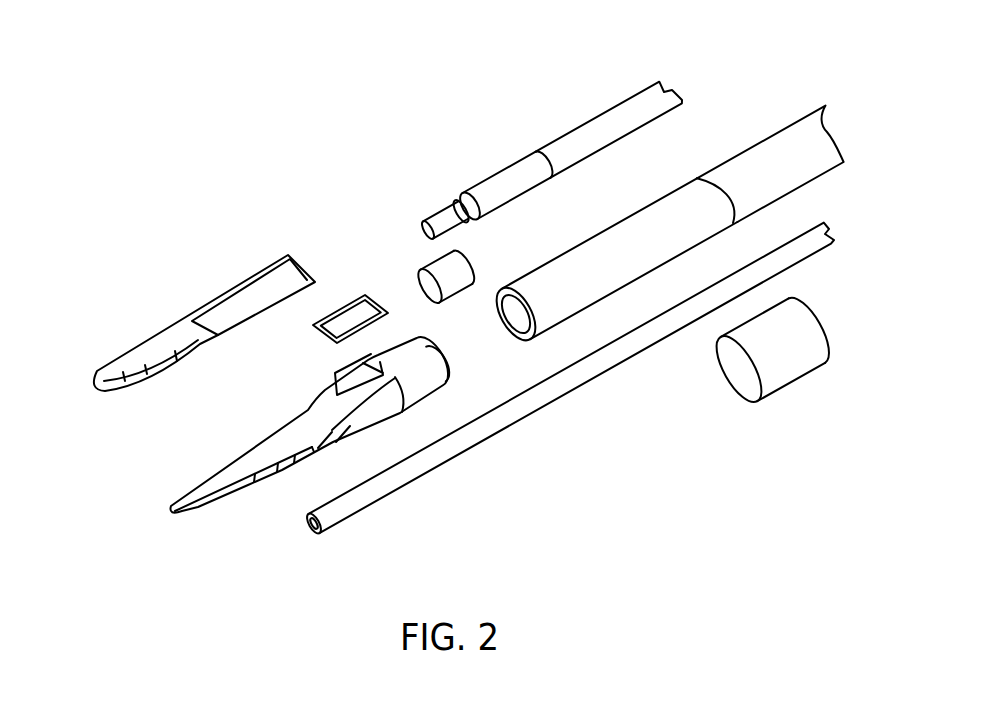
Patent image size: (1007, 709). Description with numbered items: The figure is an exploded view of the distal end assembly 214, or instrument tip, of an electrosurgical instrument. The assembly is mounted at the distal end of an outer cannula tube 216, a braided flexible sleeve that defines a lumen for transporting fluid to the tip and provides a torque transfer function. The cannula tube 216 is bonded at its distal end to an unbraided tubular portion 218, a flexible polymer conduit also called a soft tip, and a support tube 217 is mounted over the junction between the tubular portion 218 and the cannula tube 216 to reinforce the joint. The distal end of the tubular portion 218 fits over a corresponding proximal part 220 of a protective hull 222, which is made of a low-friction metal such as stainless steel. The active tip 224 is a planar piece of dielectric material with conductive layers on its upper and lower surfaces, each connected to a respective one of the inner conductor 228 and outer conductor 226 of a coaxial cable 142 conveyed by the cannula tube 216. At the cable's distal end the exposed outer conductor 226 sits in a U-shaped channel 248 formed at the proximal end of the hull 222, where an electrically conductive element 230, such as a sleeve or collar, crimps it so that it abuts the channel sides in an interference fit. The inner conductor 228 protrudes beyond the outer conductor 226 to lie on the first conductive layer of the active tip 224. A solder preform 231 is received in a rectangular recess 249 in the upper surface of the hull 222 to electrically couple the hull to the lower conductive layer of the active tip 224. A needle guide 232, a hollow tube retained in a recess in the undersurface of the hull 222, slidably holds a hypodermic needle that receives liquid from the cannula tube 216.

The distal end assembly 214 is at (163, 276).
The coaxial cable 142 is at (613, 122).
The outer cannula tube 216 is at (770, 132).
The support tube 217 is at (792, 363).
The tubular portion 218 is at (587, 253).
The proximal part 220 is at (440, 377).
The protective hull 222 is at (272, 483).
The active tip 224 is at (110, 393).
The outer conductor 226 is at (515, 162).
The inner conductor 228 is at (440, 217).
The electrically conductive element 230 is at (430, 271).
The solder preform 231 is at (340, 290).
The needle guide 232 is at (440, 452).
The U-shaped channel 248 is at (410, 356).
The recess 249 is at (322, 403).